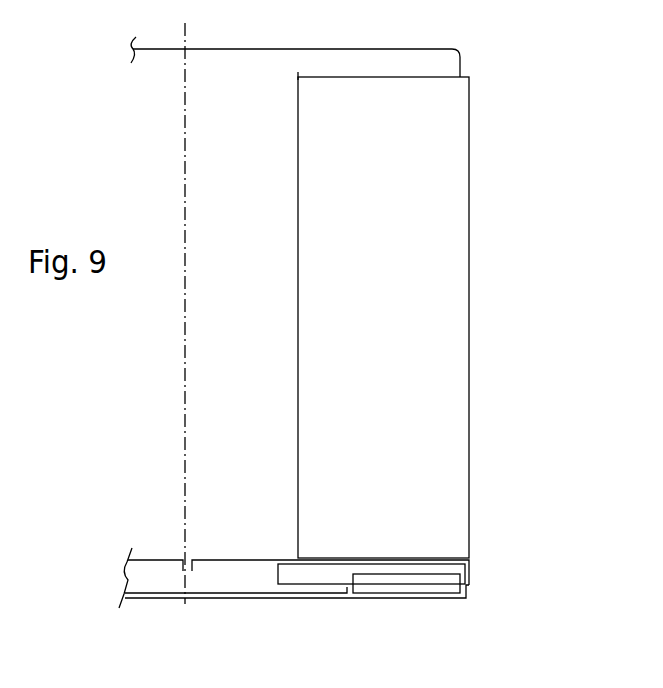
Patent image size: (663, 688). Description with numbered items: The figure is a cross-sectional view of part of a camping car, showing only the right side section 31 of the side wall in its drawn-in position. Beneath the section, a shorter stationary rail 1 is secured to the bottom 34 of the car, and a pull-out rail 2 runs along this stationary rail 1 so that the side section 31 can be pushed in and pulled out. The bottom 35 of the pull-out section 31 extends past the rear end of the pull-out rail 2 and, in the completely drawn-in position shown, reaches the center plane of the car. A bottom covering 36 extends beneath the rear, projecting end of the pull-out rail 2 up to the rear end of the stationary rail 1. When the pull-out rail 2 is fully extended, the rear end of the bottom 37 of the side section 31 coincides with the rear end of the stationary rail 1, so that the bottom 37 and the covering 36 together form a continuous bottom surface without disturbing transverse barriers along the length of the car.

The stationary rail 1 is at (427, 584).
The pull-out rail 2 is at (320, 573).
The right side section 31 is at (449, 272).
The bottom of the car 34 is at (437, 599).
The bottom of the pull-out section 35 is at (185, 73).
The bottom covering 36 is at (153, 592).
The bottom of the side section 37 is at (232, 558).